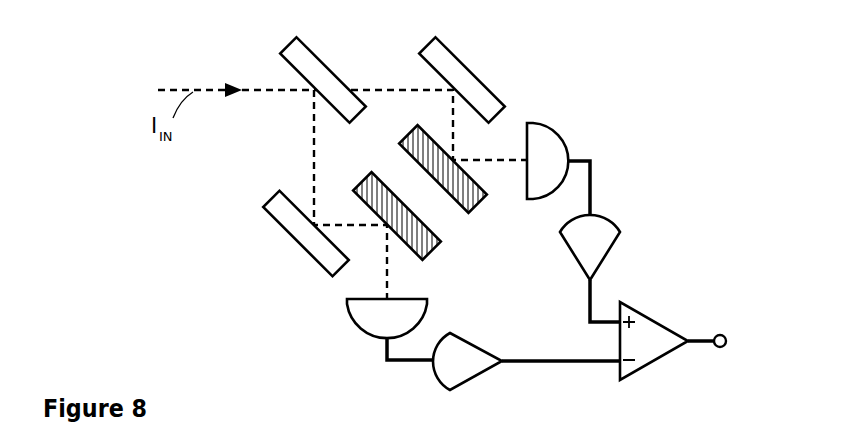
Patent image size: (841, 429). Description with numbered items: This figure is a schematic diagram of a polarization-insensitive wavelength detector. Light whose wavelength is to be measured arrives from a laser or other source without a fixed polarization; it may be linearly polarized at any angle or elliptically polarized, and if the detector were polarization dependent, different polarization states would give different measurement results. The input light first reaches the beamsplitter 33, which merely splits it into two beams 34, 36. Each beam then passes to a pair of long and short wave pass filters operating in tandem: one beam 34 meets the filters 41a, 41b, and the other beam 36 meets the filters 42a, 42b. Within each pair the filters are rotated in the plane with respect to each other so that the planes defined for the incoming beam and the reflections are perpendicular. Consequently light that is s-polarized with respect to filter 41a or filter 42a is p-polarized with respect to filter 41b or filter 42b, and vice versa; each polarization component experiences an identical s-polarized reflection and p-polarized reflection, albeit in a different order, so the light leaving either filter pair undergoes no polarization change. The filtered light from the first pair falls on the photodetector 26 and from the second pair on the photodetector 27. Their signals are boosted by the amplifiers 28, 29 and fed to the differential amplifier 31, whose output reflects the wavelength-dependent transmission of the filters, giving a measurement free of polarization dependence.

The beamsplitter 33 is at (313, 65).
The beam 34 is at (376, 88).
The beam 36 is at (313, 141).
The long wave pass filter 41a is at (457, 77).
The long wave pass filter 41b is at (466, 200).
The short wave pass filter 42a is at (293, 228).
The short wave pass filter 42b is at (420, 244).
The photodetector 26 is at (552, 160).
The photodetector 27 is at (372, 318).
The amplifier 28 is at (598, 240).
The amplifier 29 is at (468, 360).
The differential amplifier 31 is at (646, 340).